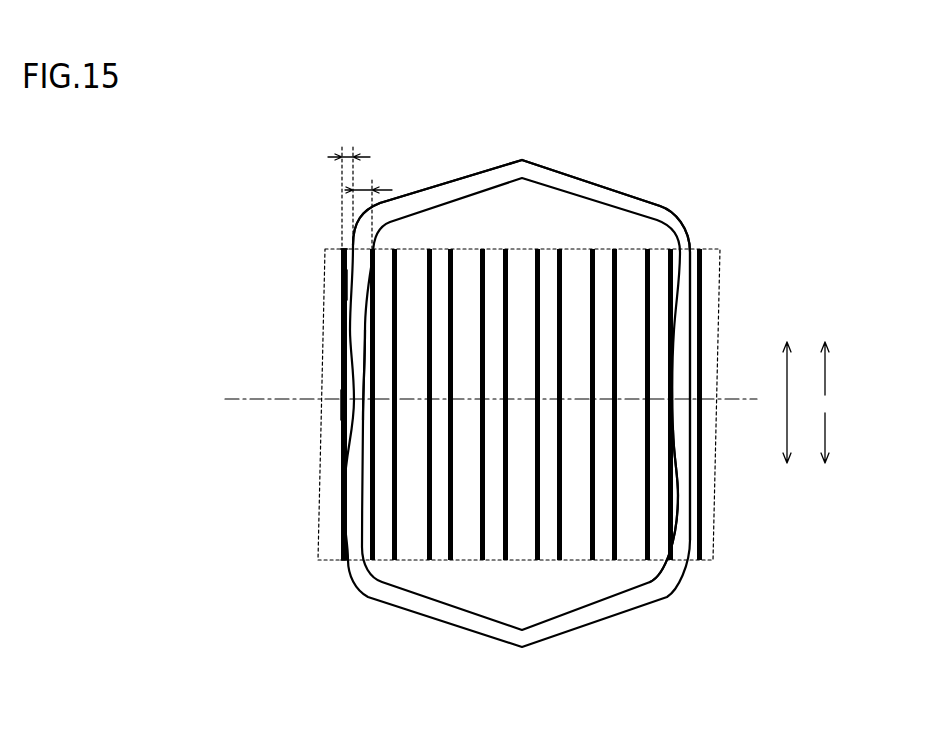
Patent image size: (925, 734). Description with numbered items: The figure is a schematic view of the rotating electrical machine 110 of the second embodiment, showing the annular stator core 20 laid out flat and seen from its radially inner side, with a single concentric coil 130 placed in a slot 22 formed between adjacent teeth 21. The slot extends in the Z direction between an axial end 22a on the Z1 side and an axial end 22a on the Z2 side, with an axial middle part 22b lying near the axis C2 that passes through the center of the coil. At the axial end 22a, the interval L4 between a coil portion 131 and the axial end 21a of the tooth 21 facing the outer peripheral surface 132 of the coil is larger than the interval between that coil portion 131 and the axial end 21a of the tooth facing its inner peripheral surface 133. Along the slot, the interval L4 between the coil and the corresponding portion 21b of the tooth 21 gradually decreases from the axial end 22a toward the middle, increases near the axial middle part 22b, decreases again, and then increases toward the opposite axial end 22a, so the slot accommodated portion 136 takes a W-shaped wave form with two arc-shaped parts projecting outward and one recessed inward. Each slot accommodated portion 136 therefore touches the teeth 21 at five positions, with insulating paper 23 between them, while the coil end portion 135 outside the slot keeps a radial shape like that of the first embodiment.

The rotating electrical machine 110 is at (702, 172).
The stator core 20 is at (719, 334).
The teeth 21 is at (487, 553).
The axial end of tooth 21a is at (338, 249).
The corresponding portion of tooth 21b is at (345, 289).
The slot 22 is at (340, 258).
The axial end of slot 22a is at (343, 248).
The axial middle part of slot 22b is at (344, 408).
The insulating paper 23 is at (398, 277).
The concentric coil 130 is at (547, 155).
The coil portion 131 is at (351, 246).
The outer peripheral surface 132 is at (465, 176).
The inner peripheral surface 133 is at (449, 203).
The coil end portion 135 is at (632, 174).
The slot accommodated portion 136 is at (357, 464).
The axis C2 is at (737, 398).
The interval L4 is at (349, 184).
The Z direction Z is at (797, 402).
The Z1 direction Z1 is at (841, 368).
The Z2 direction Z2 is at (842, 436).